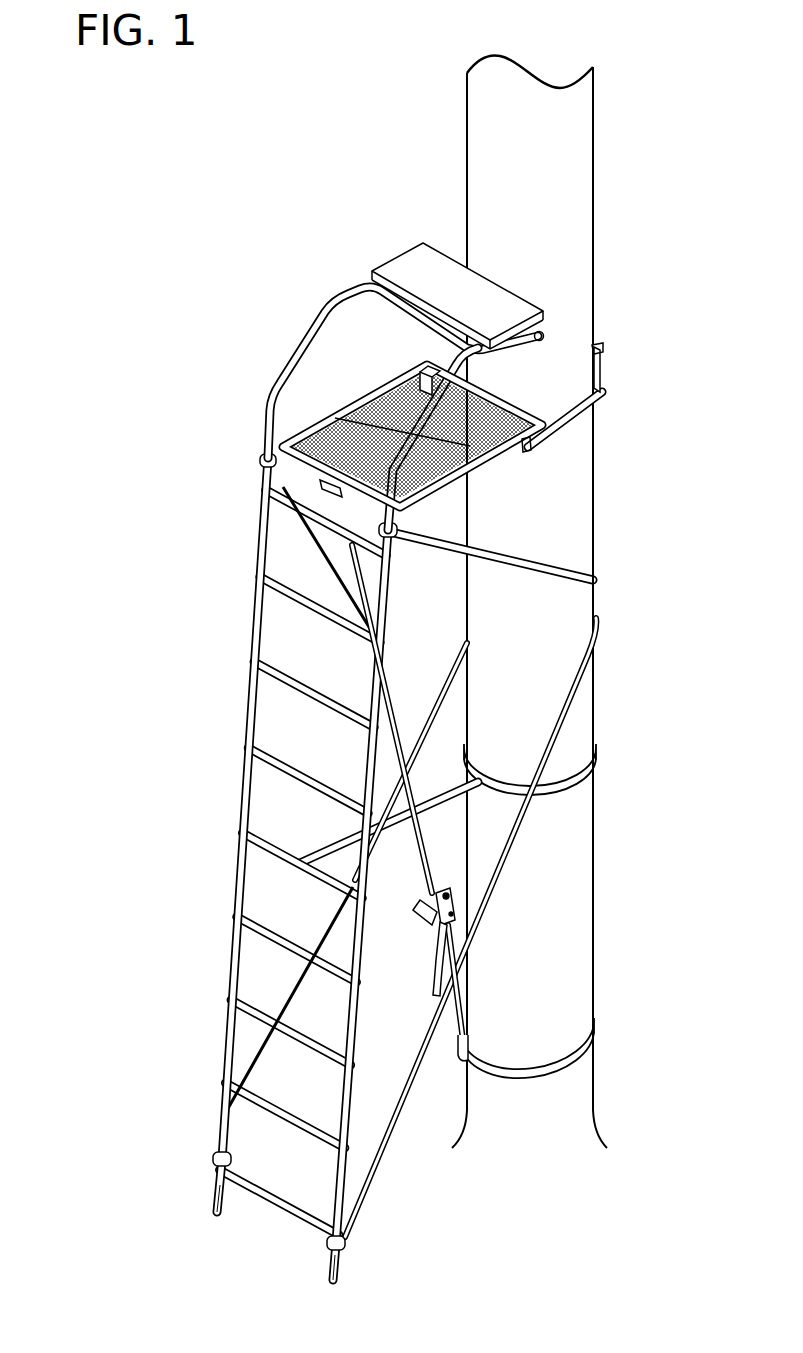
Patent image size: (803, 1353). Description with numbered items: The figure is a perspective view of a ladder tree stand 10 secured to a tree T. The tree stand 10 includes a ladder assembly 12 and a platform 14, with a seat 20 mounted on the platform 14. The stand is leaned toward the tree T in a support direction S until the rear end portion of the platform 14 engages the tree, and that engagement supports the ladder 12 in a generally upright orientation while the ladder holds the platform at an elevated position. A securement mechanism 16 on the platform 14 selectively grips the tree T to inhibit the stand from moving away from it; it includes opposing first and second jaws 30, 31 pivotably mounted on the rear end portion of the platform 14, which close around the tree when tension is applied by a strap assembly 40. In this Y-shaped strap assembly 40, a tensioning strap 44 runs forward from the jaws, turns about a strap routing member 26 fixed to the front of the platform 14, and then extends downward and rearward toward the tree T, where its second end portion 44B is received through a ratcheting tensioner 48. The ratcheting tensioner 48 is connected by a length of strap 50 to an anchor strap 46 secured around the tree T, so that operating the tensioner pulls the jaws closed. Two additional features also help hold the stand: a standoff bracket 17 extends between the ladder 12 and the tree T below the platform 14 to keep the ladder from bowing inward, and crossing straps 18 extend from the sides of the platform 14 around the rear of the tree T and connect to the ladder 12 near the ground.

The ladder tree stand 10 is at (224, 867).
The ladder assembly 12 is at (232, 990).
The platform 14 is at (500, 455).
The securement mechanism 16 is at (575, 448).
The standoff bracket 17 is at (450, 797).
The crossing straps 18 is at (578, 578).
The seat 20 is at (415, 262).
The strap routing member 26 is at (330, 484).
The first jaw 30 is at (605, 392).
The second jaw 31 is at (452, 360).
The strap assembly 40 is at (467, 917).
The tensioning strap 44 is at (398, 716).
The second end portion of tensioning strap 44B is at (422, 893).
The anchor strap 46 is at (540, 1078).
The ratcheting tensioner 48 is at (455, 910).
The length of strap 50 is at (465, 1010).
The support direction S is at (198, 1115).
The tree T is at (597, 833).